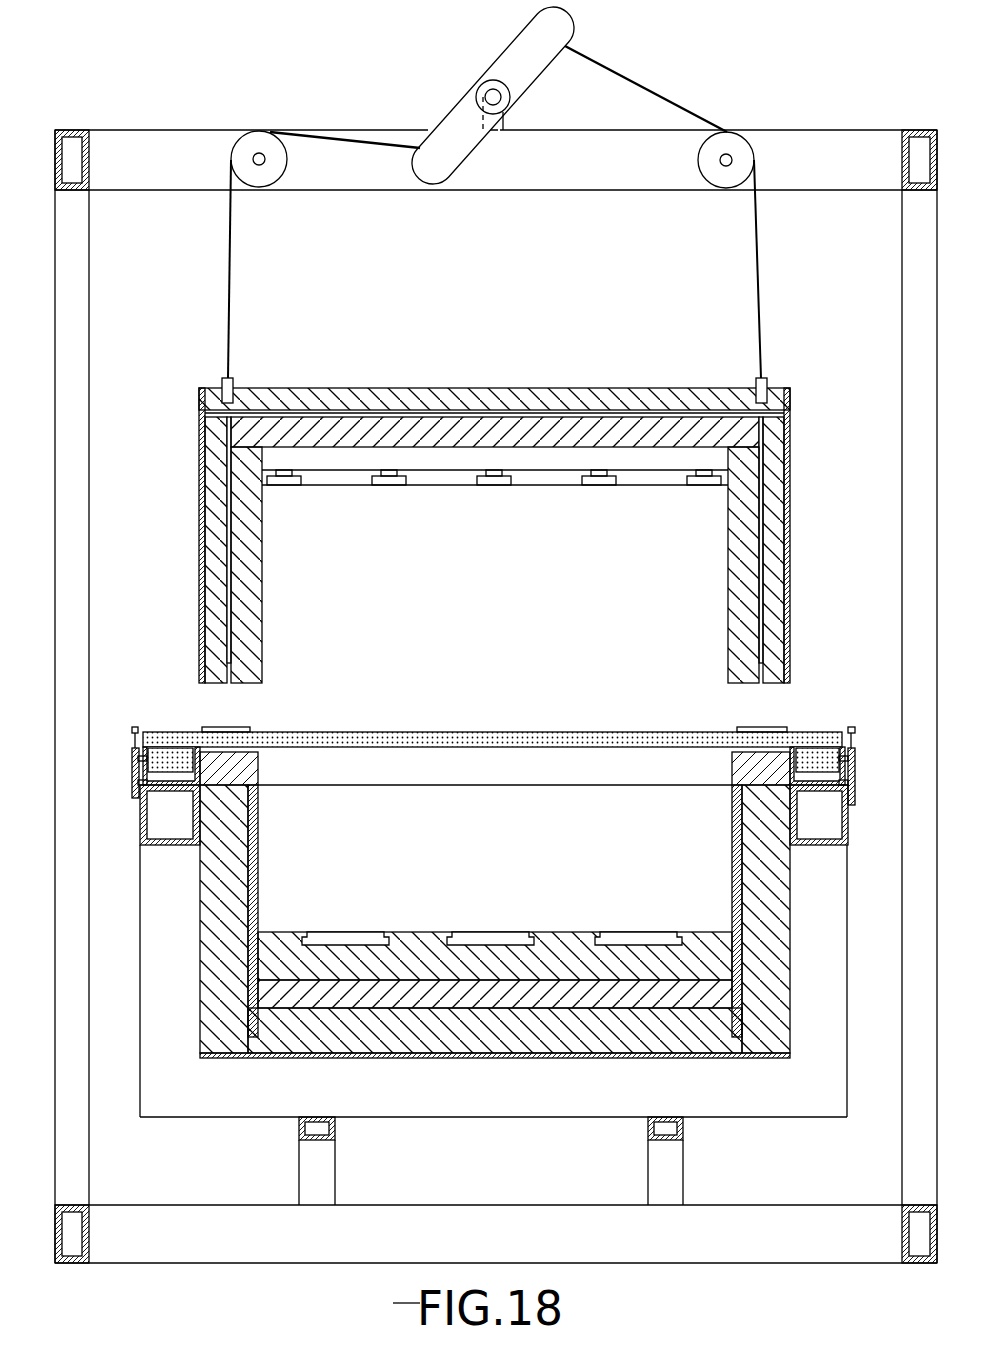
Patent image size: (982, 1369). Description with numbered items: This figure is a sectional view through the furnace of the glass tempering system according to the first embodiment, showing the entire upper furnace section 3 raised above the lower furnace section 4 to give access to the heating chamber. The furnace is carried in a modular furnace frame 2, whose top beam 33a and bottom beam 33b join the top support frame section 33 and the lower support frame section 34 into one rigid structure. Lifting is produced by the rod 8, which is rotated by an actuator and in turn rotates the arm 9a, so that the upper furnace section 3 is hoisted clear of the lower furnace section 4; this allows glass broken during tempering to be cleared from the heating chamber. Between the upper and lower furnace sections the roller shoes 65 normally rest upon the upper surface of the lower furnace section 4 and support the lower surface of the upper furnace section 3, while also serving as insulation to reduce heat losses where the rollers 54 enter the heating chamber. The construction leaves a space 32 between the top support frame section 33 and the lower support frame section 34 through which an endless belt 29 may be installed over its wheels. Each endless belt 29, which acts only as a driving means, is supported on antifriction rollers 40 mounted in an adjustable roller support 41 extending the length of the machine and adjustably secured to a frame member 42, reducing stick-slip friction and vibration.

The modular furnace frame 2 is at (496, 692).
The top frame beam 33a is at (160, 150).
The bottom frame beam 33b is at (785, 1250).
The top support frame section 33 is at (920, 1103).
The arm 9a is at (560, 35).
The rod 8 is at (501, 97).
The upper furnace section 3 is at (617, 378).
The roller 54 is at (527, 732).
The roller shoe 65 is at (240, 724).
The endless belt 29 is at (160, 750).
The antifriction roller 40 is at (168, 757).
The adjustable roller support 41 is at (140, 780).
The frame member 42 is at (827, 827).
The space 32 is at (118, 960).
The lower support frame section 34 is at (163, 1022).
The lower furnace section 4 is at (222, 1118).